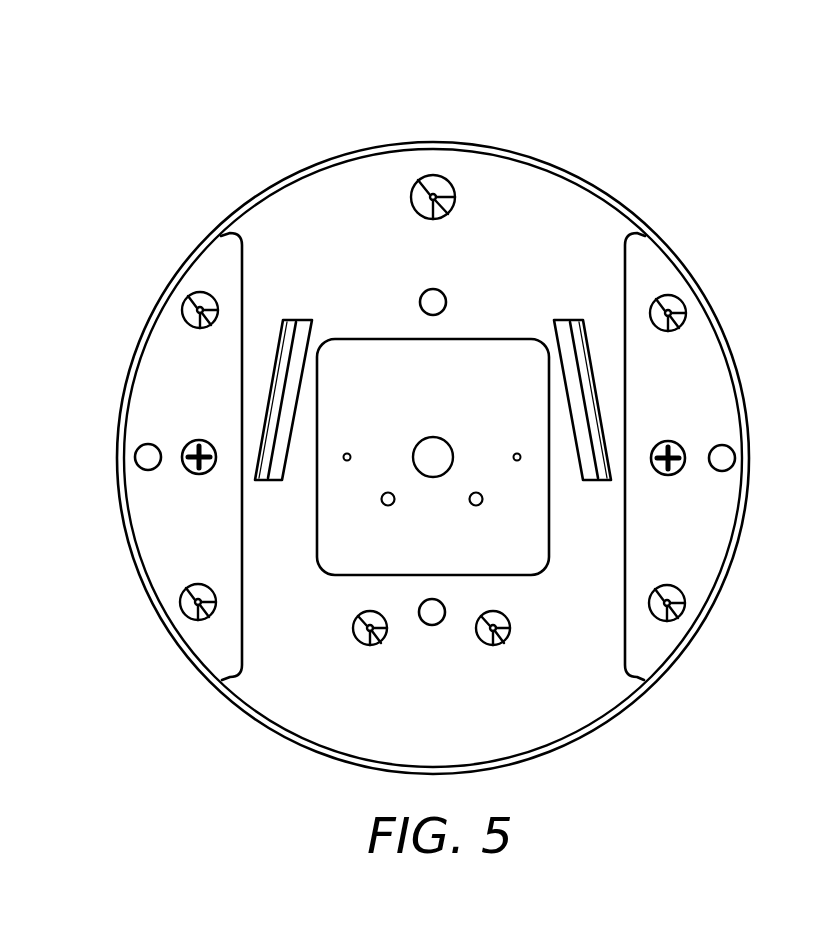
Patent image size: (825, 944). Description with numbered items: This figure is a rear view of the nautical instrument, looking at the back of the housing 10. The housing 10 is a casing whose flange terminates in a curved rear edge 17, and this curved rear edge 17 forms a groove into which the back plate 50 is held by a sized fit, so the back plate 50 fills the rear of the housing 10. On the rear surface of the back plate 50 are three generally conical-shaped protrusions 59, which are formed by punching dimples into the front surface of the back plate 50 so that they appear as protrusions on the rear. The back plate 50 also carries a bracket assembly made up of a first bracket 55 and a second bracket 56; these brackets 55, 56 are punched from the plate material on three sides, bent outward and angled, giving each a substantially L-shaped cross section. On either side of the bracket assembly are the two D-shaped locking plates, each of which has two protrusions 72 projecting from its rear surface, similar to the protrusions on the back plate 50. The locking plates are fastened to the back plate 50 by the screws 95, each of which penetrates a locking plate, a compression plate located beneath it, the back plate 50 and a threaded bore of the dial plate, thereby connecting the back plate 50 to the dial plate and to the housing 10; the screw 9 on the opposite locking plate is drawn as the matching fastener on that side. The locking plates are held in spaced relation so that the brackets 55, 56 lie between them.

The housing 10 is at (746, 157).
The curved rear edge 17 is at (730, 350).
The back plate 50 is at (540, 223).
The first bracket 55 is at (296, 328).
The second bracket 56 is at (578, 328).
The conical-shaped protrusions 59 is at (425, 184).
The protrusions 72 is at (190, 296).
The screws 95 is at (203, 440).
The phillips screw 9 is at (682, 445).